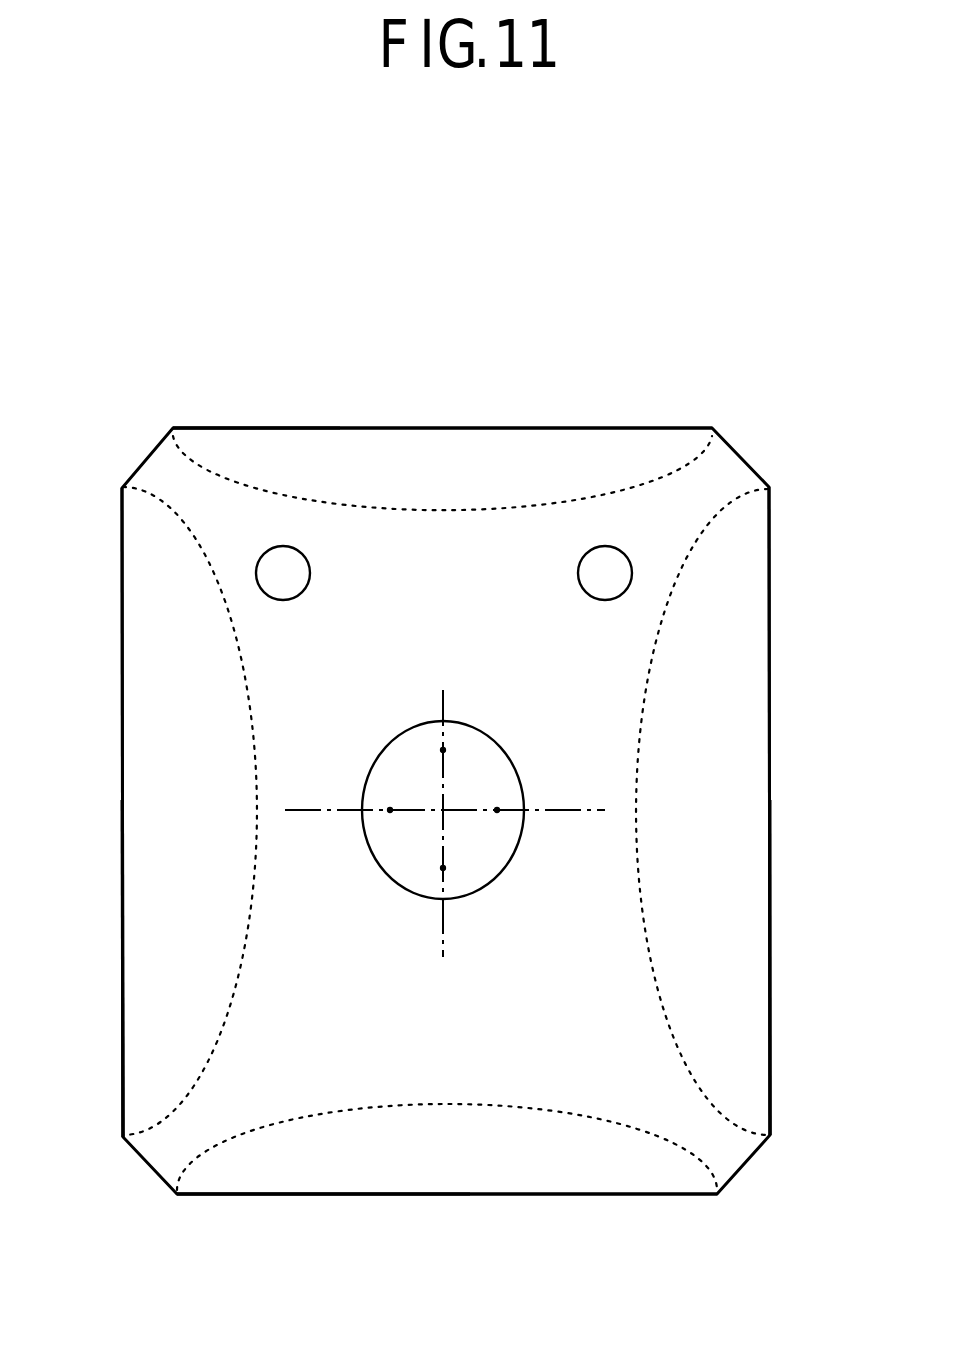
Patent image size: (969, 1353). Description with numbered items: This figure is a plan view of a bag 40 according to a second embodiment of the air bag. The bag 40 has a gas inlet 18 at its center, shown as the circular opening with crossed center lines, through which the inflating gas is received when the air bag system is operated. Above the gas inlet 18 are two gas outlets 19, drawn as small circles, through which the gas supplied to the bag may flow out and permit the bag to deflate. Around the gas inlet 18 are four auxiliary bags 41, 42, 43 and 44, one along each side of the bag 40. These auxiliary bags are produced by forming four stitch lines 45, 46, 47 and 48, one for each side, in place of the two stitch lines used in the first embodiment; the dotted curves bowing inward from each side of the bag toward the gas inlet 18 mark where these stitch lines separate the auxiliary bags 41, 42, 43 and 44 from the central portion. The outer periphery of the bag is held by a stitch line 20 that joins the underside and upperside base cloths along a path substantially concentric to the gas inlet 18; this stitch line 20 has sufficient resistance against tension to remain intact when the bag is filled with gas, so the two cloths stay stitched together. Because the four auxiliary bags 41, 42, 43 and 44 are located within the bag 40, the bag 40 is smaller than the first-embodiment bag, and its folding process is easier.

The bag 40 is at (549, 411).
The auxiliary bag 41 is at (143, 756).
The auxiliary bag 42 is at (743, 671).
The auxiliary bag 43 is at (457, 447).
The auxiliary bag 44 is at (555, 1178).
The stitch line 45 is at (121, 919).
The stitch line 46 is at (772, 1073).
The stitch line 47 is at (338, 425).
The stitch line 48 is at (453, 1196).
The gas inlet 18 is at (490, 885).
The gas outlet 19 is at (310, 590).
The stitch line 20 is at (655, 984).